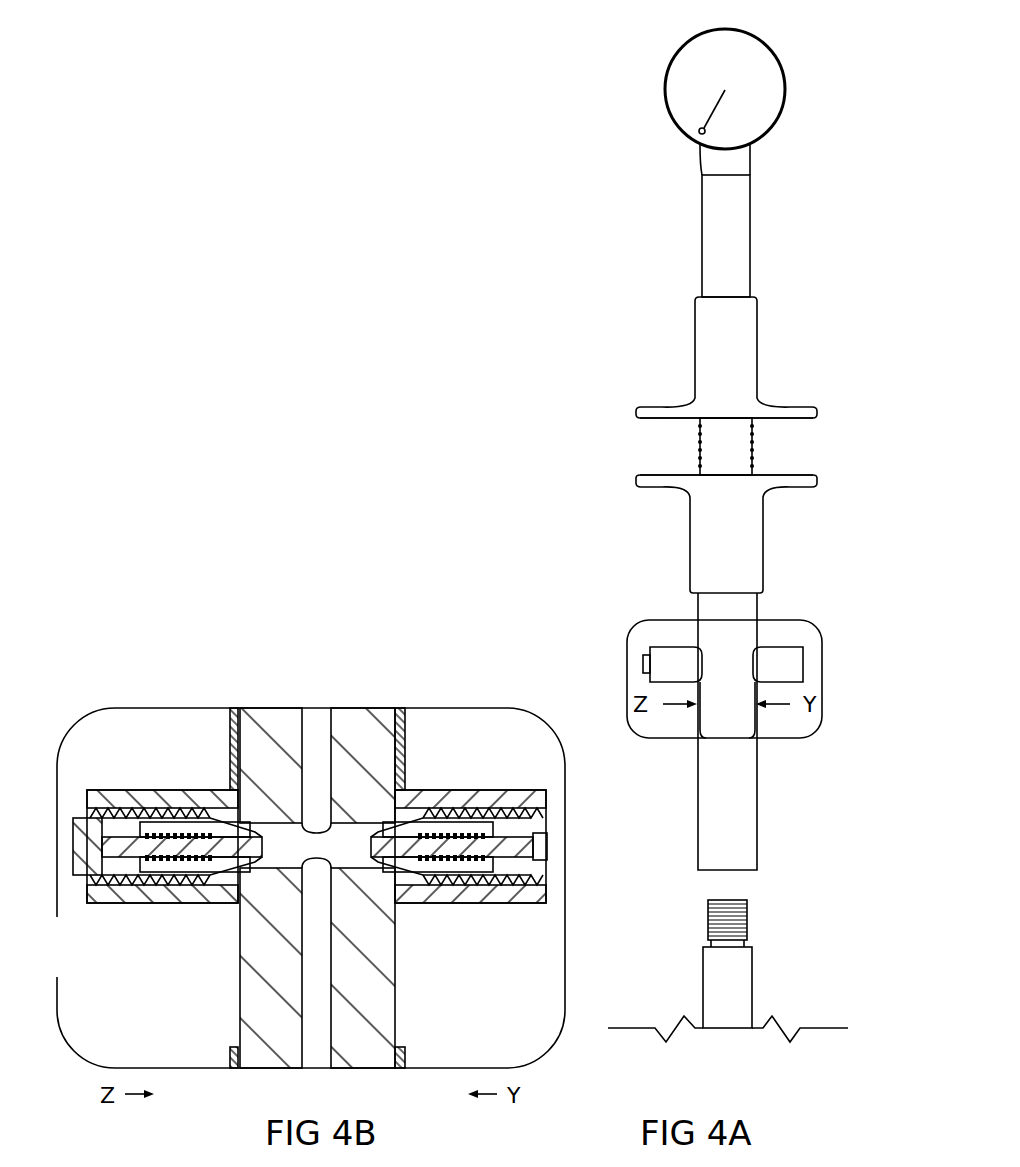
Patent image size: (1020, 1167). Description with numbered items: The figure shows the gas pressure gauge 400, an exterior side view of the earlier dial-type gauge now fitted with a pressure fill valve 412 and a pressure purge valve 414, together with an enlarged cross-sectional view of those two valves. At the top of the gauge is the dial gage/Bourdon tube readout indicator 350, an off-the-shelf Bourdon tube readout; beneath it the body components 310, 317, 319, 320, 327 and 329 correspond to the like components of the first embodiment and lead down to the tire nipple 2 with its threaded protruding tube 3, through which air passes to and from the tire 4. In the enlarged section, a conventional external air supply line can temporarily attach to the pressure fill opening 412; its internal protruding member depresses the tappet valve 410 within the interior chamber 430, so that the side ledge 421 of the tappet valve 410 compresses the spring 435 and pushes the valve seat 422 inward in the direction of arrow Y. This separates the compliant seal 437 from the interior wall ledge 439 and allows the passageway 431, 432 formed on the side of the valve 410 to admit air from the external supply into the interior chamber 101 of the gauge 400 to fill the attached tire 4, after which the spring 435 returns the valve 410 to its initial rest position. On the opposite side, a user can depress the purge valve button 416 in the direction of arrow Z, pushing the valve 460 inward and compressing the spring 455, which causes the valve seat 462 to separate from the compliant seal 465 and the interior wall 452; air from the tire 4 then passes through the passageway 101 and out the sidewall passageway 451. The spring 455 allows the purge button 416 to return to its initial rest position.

In FIG. 4A, the gas pressure gauge 400 is at (597, 225).
In FIG. 4A, the dial gage/Bourdon tube readout indicator 350 is at (786, 90).
In FIG. 4A, the gauge body component 310 is at (752, 236).
In FIG. 4A, the gauge component 317 is at (816, 409).
In FIG. 4A, the gauge component 319 is at (637, 410).
In FIG. 4A, the gauge component 327 is at (816, 481).
In FIG. 4A, the gauge component 329 is at (637, 479).
In FIG. 4A, the gauge component 320 is at (758, 831).
In FIG. 4B, the tappet valve 410 is at (548, 847).
In FIG. 4A, the pressure fill valve 412 is at (783, 647).
In FIG. 4B, the pressure fill valve 412 is at (548, 797).
In FIG. 4A, the pressure purge valve 414 is at (672, 647).
In FIG. 4B, the pressure purge valve 414 is at (148, 903).
In FIG. 4A, the purge valve button 416 is at (648, 662).
In FIG. 4B, the purge valve button 416 is at (83, 818).
In FIG. 4A, the threaded protruding tube 3 is at (748, 920).
In FIG. 4A, the tire nipple 2 is at (753, 987).
In FIG. 4A, the tire 4 is at (826, 1028).
In FIG. 4B, the interior chamber 101 is at (317, 743).
In FIG. 4B, the valve seat 422 is at (400, 708).
In FIG. 4B, the valve seat 462 is at (240, 790).
In FIG. 4B, the spring 455 is at (168, 833).
In FIG. 4B, the sidewall passageway 451 is at (205, 830).
In FIG. 4B, the compliant seal 465 is at (250, 828).
In FIG. 4B, the valve 460 is at (195, 870).
In FIG. 4B, the interior wall 452 is at (228, 862).
In FIG. 4B, the compliant seal 437 is at (388, 828).
In FIG. 4B, the passageway 431 is at (405, 832).
In FIG. 4B, the spring 435 is at (466, 822).
In FIG. 4B, the passageway 432 is at (492, 862).
In FIG. 4B, the side ledge 421 is at (488, 872).
In FIG. 4B, the interior chamber 430 is at (436, 862).
In FIG. 4B, the interior wall ledge 439 is at (400, 862).